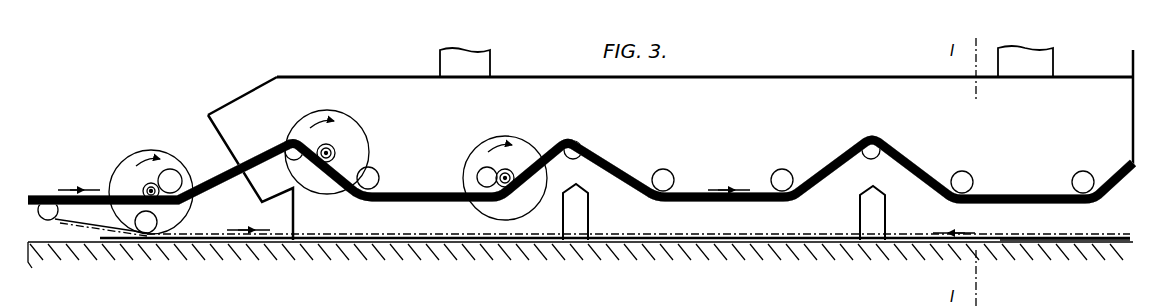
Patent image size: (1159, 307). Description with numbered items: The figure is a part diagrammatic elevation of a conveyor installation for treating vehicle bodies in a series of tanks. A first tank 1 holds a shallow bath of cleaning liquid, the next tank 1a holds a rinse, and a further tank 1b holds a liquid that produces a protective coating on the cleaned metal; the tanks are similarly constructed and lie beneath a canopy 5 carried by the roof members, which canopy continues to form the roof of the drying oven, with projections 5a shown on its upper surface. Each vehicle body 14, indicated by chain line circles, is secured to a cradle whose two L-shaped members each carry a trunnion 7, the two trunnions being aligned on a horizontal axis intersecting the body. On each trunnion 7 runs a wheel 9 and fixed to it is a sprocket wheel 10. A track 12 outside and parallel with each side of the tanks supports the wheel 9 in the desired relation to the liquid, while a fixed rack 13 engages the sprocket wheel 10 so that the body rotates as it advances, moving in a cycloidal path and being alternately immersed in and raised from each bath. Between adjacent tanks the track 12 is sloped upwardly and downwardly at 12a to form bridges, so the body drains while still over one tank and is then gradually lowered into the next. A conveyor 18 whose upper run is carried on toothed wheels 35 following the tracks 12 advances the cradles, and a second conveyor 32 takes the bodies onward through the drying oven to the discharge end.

The tank 1 is at (543, 227).
The tank 1a is at (848, 225).
The tank 1b is at (1090, 225).
The canopy 5 is at (730, 77).
The cover projection 5a is at (492, 60).
The trunnion 7 is at (145, 188).
The wheel 9 is at (334, 152).
The sprocket wheel 10 is at (147, 186).
The track 12 is at (752, 300).
The bridge 12a is at (228, 142).
The rack 13 is at (100, 205).
The vehicle body 14 is at (160, 150).
The conveyor 18 is at (242, 160).
The second conveyor 32 is at (595, 300).
The toothed wheel 35 is at (44, 198).